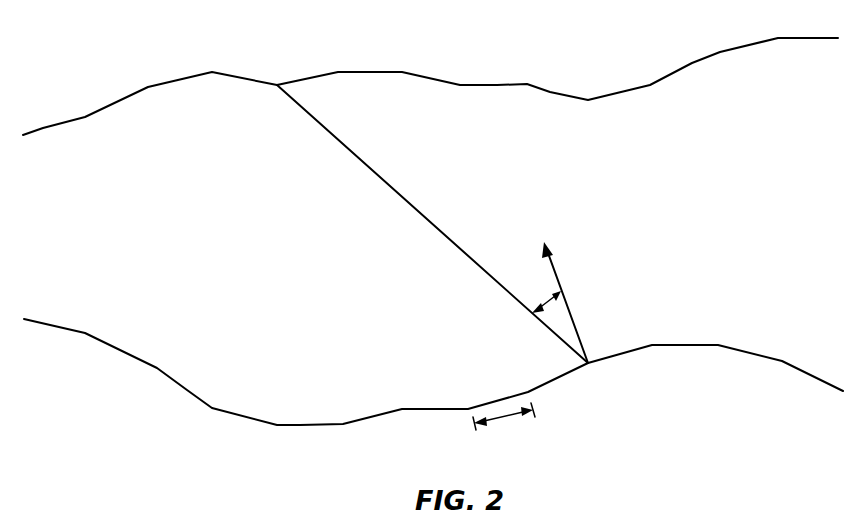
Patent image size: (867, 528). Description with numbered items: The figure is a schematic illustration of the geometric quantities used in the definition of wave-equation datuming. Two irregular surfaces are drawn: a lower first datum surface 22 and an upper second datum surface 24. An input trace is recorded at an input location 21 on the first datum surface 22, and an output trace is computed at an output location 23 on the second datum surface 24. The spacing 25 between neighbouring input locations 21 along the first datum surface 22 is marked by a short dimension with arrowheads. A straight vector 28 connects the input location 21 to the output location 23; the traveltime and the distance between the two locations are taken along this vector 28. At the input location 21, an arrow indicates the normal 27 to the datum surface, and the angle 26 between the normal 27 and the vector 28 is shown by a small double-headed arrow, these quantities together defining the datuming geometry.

The input location 21 is at (590, 367).
The first datum surface 22 is at (190, 390).
The output location 23 is at (279, 84).
The second datum surface 24 is at (690, 64).
The spacing 25 is at (500, 418).
The angle 26 is at (543, 297).
The normal 27 is at (558, 270).
The vector 28 is at (398, 193).